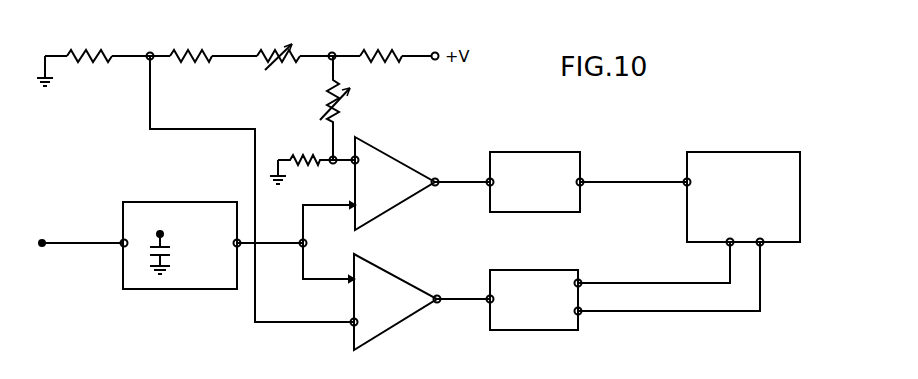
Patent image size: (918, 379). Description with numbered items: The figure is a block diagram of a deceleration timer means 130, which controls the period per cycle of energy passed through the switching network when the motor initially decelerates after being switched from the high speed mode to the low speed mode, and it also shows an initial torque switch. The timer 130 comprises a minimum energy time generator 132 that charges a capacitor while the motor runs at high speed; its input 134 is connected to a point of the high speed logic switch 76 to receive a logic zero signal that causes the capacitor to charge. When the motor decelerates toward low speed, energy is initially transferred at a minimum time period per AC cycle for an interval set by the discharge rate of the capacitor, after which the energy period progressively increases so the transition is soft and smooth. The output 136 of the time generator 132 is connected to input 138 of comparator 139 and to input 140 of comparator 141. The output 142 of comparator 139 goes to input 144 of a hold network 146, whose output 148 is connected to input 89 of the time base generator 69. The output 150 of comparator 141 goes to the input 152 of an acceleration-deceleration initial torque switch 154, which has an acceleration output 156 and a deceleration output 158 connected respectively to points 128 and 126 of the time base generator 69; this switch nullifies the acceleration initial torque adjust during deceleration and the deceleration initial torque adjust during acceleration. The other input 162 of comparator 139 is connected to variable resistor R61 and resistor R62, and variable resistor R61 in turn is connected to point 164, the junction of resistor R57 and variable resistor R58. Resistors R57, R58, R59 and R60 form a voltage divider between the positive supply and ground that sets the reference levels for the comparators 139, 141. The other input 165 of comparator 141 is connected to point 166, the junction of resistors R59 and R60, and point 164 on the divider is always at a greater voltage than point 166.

The deceleration timer means 130 is at (693, 105).
The minimum energy time generator 132 is at (208, 230).
The input of the time generator 134 is at (43, 240).
The output of the time generator 136 is at (240, 249).
The input of comparator 139 138 is at (352, 210).
The comparator 139 is at (394, 196).
The input of comparator 141 140 is at (350, 284).
The comparator 141 is at (393, 312).
The output of comparator 139 142 is at (438, 178).
The input of hold network 144 is at (489, 188).
The hold network 146 is at (550, 195).
The output of hold network 148 is at (583, 187).
The output of comparator 141 150 is at (436, 306).
The input of torque switch 152 is at (489, 305).
The acceleration-deceleration initial torque switch 154 is at (548, 308).
The acceleration output 156 is at (582, 280).
The deceleration output 158 is at (581, 315).
The other input of comparator 139 162 is at (349, 166).
The point 164 is at (334, 50).
The other input of comparator 141 165 is at (346, 330).
The point 166 is at (156, 60).
The time base generator 69 is at (756, 208).
The input of the time base generator 89 is at (684, 178).
The point of the time base generator 126 is at (726, 246).
The point of the time base generator 128 is at (763, 247).
The high speed logic switch 76 is at (42, 248).
The resistor R57 is at (392, 50).
The variable resistor R58 is at (268, 48).
The resistor R59 is at (196, 50).
The resistor R60 is at (90, 50).
The variable resistor R61 is at (342, 108).
The resistor R62 is at (316, 150).